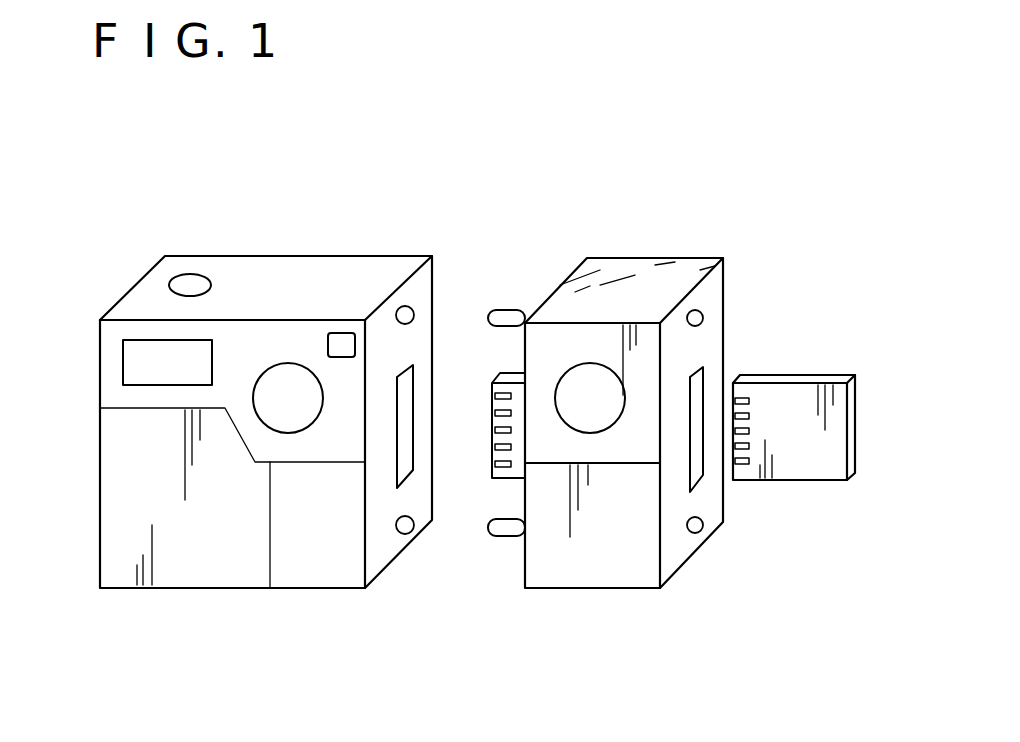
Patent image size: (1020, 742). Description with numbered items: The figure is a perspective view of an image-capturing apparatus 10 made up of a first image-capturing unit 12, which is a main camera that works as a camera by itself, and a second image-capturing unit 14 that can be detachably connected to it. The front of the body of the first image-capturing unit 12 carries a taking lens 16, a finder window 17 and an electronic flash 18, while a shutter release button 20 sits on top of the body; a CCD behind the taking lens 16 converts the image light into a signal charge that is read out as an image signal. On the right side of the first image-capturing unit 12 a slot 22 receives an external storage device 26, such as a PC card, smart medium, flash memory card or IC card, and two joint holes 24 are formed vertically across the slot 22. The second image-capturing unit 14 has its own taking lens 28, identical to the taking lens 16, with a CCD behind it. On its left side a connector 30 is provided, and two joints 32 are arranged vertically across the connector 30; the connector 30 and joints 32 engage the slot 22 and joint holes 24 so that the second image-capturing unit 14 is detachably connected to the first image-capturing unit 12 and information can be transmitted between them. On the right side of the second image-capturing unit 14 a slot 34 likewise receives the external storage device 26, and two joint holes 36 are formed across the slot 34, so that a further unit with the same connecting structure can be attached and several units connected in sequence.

The image-capturing apparatus 10 is at (455, 186).
The first image-capturing unit 12 is at (245, 256).
The second image-capturing unit 14 is at (608, 257).
The taking lens 16 is at (288, 363).
The finder window 17 is at (345, 333).
The electronic flash 18 is at (135, 367).
The shutter release button 20 is at (183, 286).
The slot 22 is at (397, 480).
The joint holes 24 is at (412, 312).
The external storage device 26 is at (793, 452).
The taking lens 28 is at (590, 363).
The connector 30 is at (497, 478).
The joints 32 is at (505, 310).
The slot 34 is at (693, 483).
The joint holes 36 is at (703, 317).